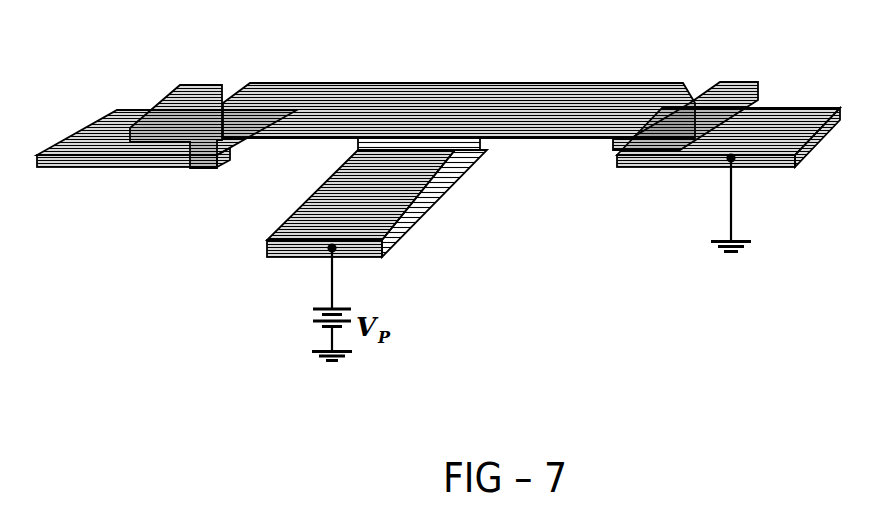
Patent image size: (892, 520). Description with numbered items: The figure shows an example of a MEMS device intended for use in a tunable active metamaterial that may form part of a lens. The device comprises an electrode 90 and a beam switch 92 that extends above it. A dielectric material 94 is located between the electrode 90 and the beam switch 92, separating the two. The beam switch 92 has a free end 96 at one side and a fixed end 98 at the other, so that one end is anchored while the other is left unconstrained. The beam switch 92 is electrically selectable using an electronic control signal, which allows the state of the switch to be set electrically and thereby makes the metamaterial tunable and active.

The electrode 90 is at (379, 233).
The beam switch 92 is at (623, 99).
The dielectric material 94 is at (438, 148).
The free end 96 is at (176, 159).
The fixed end 98 is at (639, 175).